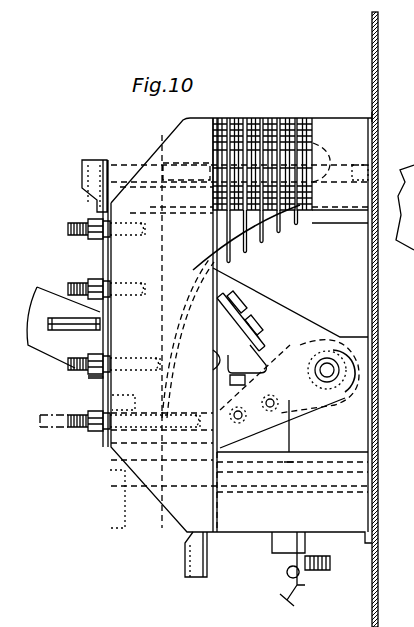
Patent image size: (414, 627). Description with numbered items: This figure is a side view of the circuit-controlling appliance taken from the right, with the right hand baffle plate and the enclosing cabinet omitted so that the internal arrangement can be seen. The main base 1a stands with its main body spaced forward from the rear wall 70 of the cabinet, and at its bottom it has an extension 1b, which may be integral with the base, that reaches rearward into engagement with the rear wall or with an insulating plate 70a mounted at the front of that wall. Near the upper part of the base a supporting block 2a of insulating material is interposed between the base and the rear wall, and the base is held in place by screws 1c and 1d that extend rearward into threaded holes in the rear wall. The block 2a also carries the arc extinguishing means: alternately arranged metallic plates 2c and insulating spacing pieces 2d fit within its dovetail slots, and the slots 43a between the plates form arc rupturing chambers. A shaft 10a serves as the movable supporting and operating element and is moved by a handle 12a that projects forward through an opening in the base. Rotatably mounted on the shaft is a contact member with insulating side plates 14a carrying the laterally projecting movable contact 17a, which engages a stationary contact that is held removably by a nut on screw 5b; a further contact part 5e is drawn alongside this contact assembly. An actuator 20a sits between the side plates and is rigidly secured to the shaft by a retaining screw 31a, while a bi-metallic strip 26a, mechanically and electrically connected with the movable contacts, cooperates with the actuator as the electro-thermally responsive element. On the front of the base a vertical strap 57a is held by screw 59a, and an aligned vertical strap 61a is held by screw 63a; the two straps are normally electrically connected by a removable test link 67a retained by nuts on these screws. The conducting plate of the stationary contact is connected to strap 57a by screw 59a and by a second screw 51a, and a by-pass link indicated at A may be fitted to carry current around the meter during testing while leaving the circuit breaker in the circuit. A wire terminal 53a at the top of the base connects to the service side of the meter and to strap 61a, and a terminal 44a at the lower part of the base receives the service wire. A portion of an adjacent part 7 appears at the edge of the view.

The rear wall 70 is at (372, 47).
The insulating plate 70a is at (372, 117).
The main base 1a is at (182, 124).
The base extension 1b is at (250, 528).
The screw 1c is at (350, 172).
The screw 1d is at (292, 478).
The supporting block 2a is at (343, 221).
The metallic plate 2c is at (278, 118).
The insulating spacing piece 2d is at (240, 118).
The slot 43a is at (270, 232).
The wire terminal 53a is at (92, 175).
The vertical strap 61a is at (100, 256).
The screw 63a is at (85, 305).
The handle 12a is at (63, 309).
The test link 67a is at (100, 346).
The screw 59a is at (75, 362).
The vertical strap 57a is at (104, 400).
The screw 51a is at (77, 427).
The by-pass link A is at (100, 443).
The bi-metallic strip 26a is at (212, 322).
The screw 5b is at (188, 338).
The contact bar 5e is at (240, 330).
The movable contact 17a is at (252, 346).
The side plate 14a is at (285, 313).
The shaft 10a is at (343, 368).
The retaining screw 31a is at (365, 385).
The actuator 20a is at (308, 410).
The terminal 44a is at (190, 565).
The adjacent part 7 is at (405, 207).